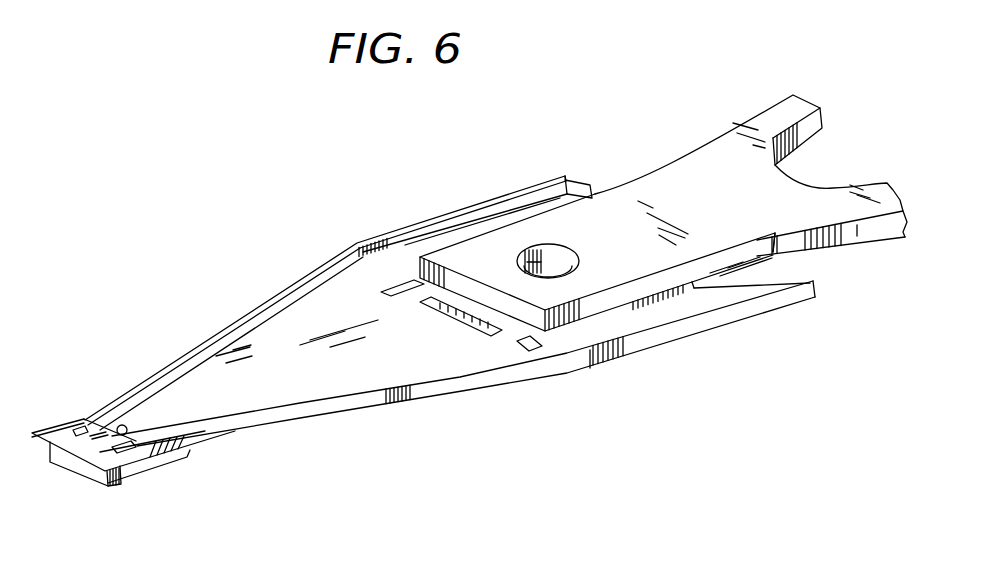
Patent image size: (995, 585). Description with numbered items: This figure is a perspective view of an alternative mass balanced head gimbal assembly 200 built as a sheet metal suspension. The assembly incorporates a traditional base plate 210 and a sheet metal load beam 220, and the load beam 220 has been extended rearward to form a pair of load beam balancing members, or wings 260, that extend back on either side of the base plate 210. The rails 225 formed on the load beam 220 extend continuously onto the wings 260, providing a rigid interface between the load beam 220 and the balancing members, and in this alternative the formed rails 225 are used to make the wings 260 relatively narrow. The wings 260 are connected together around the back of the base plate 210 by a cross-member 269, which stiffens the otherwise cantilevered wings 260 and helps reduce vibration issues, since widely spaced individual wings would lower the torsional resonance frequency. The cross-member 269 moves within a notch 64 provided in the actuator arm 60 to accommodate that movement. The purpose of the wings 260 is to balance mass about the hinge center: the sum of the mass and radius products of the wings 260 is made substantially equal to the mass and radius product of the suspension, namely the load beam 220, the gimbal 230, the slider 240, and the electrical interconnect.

The head gimbal assembly 200 is at (505, 160).
The actuator arm 60 is at (693, 162).
The notch 64 is at (762, 250).
The base plate 210 is at (568, 337).
The load beam 220 is at (247, 348).
The rails 225 is at (308, 277).
The gimbal 230 is at (90, 450).
The slider 240 is at (197, 462).
The wings 260 is at (458, 233).
The cross-member 269 is at (720, 270).